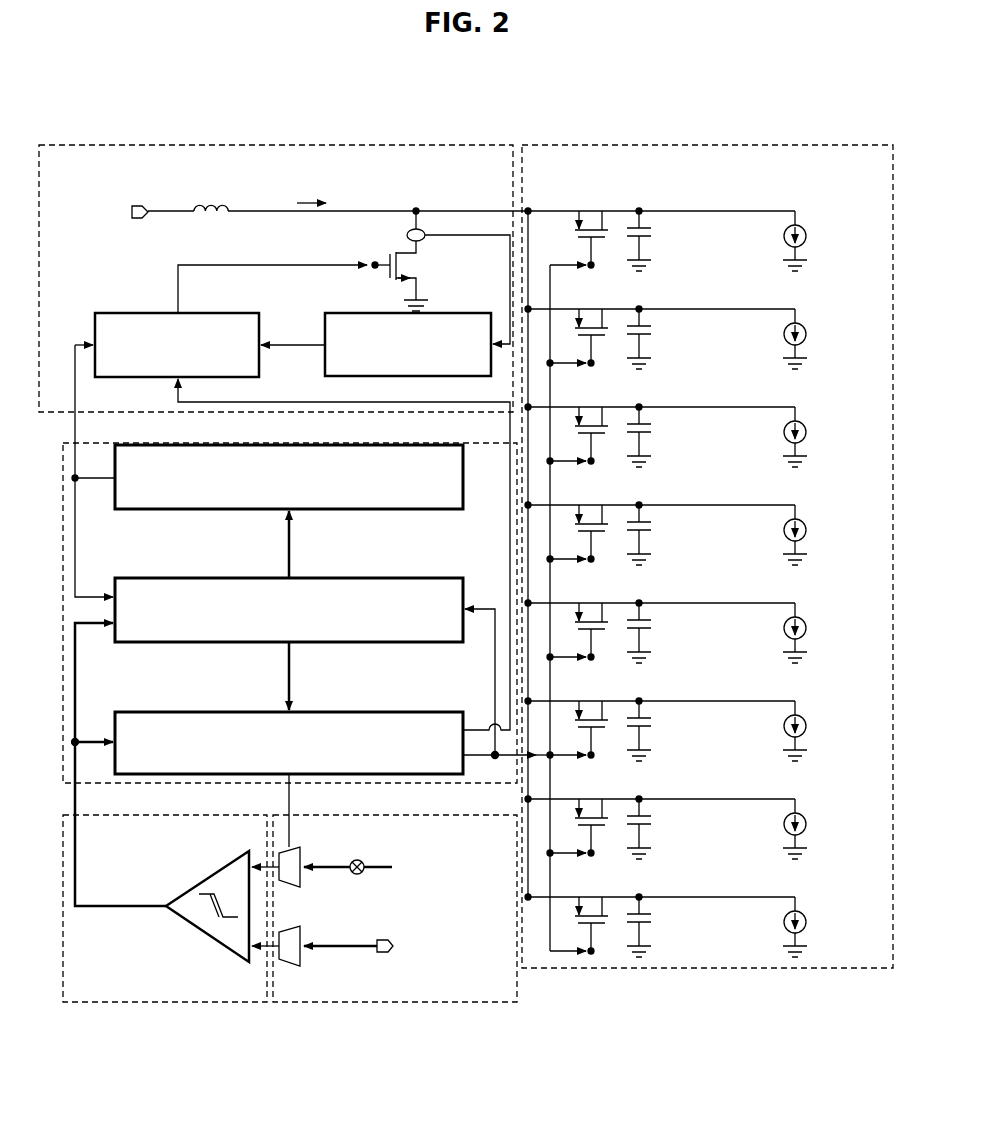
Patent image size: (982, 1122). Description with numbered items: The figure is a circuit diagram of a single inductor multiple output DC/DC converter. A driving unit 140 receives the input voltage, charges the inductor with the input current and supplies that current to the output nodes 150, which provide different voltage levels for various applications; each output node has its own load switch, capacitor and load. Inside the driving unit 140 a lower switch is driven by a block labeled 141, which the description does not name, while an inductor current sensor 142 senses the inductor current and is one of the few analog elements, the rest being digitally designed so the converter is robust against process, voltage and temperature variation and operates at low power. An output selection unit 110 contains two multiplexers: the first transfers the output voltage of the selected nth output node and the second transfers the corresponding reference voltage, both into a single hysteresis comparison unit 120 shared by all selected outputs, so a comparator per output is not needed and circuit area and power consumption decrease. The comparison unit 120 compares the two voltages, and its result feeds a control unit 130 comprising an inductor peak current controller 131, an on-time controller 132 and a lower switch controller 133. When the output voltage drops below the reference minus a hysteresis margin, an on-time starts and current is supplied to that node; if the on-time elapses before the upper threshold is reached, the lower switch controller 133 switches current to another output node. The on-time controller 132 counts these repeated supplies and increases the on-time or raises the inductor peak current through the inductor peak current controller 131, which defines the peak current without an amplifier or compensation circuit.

The output selection unit 110 is at (396, 1003).
The hysteresis comparison unit 120 is at (164, 1003).
The control unit 130 is at (340, 790).
The inductor peak current controller 131 is at (308, 445).
The on-time controller 132 is at (308, 578).
The lower switch controller 133 is at (308, 712).
The driving unit 140 is at (288, 145).
The lower switch controller 141 is at (187, 312).
The inductor current sensor 142 is at (388, 312).
The output nodes 150 is at (692, 145).